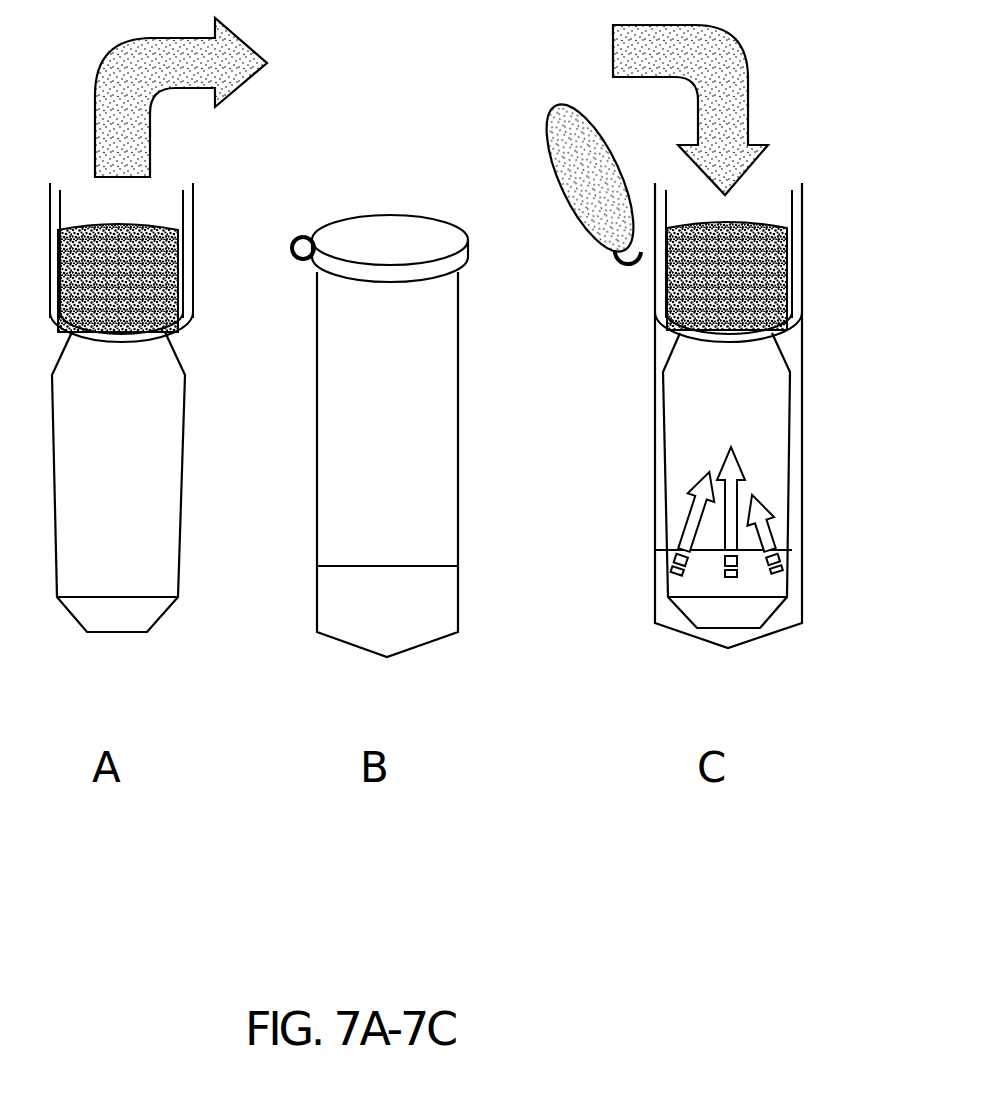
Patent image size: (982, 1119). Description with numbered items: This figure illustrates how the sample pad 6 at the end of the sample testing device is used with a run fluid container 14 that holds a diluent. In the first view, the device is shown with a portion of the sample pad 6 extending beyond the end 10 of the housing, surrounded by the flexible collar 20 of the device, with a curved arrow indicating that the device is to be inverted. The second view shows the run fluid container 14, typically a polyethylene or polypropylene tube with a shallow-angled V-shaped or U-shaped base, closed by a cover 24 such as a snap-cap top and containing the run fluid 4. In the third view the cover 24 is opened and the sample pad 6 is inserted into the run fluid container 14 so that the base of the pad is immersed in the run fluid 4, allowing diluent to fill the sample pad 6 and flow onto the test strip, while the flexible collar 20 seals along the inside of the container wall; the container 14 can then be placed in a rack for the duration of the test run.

In FIG. 7B, the run fluid (diluent) 4 is at (437, 566).
In FIG. 7C, the run fluid (diluent) 4 is at (640, 540).
In FIG. 7A, the sample pad 6 is at (185, 458).
In FIG. 7C, the sample pad 6 is at (790, 463).
In FIG. 7A, the end of housing 10 is at (198, 268).
In FIG. 7C, the end of housing 10 is at (803, 227).
In FIG. 7B, the run fluid container 14 is at (463, 465).
In FIG. 7C, the run fluid container 14 is at (640, 454).
In FIG. 7A, the flexible collar 20 is at (156, 224).
In FIG. 7C, the flexible collar 20 is at (763, 223).
In FIG. 7B, the cover 24 is at (538, 162).
In FIG. 7C, the cover 24 is at (590, 178).